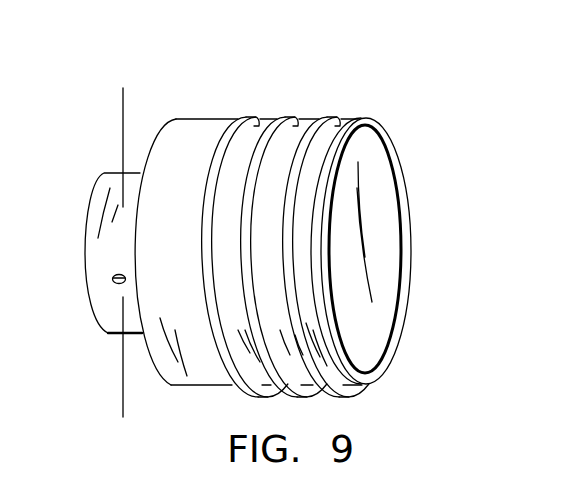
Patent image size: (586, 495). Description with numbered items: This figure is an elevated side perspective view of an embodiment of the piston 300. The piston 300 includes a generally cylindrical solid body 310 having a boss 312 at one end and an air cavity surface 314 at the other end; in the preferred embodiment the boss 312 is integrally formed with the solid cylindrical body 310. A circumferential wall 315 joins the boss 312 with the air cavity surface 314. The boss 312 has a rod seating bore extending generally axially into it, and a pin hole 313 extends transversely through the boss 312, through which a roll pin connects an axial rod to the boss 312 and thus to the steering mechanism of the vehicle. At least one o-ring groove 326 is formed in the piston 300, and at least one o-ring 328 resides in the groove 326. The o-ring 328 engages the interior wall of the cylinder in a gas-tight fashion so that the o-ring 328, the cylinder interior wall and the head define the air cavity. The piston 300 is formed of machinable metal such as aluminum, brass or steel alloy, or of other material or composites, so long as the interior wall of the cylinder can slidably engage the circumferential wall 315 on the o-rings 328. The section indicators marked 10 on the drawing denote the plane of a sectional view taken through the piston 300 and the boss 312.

The piston 300 is at (484, 86).
The solid body 310 is at (207, 118).
The boss 312 is at (105, 277).
The pin hole 313 is at (117, 275).
The air cavity surface 314 is at (391, 268).
The circumferential wall 315 is at (192, 251).
The o-ring groove 326 is at (305, 137).
The o-ring 328 is at (257, 116).
The section line 10- 10 is at (105, 102).